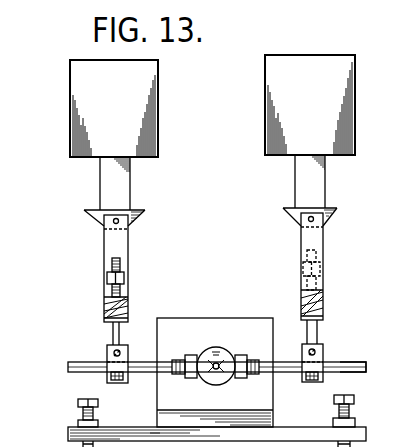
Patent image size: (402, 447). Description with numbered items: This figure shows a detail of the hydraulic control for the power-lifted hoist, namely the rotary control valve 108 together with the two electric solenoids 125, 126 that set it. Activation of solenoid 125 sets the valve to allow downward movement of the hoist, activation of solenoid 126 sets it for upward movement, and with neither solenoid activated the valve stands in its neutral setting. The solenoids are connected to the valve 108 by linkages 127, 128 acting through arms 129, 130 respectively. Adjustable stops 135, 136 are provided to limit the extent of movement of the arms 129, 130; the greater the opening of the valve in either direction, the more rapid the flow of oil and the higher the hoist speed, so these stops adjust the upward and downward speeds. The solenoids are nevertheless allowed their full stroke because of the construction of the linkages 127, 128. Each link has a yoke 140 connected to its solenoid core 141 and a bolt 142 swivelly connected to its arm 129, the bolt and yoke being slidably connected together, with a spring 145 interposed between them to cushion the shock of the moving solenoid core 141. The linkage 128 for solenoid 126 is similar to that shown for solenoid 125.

The rotary control valve 108 is at (207, 323).
The electric solenoid 125 is at (120, 121).
The electric solenoid 126 is at (316, 124).
The linkage 127 is at (134, 355).
The linkage 128 is at (288, 351).
The arm 129 is at (78, 362).
The arm 130 is at (340, 360).
The adjustable stop 135 is at (80, 412).
The adjustable stop 136 is at (349, 412).
The yoke 140 is at (104, 251).
The solenoid core 141 is at (100, 190).
The bolt 142 is at (124, 278).
The spring 145 is at (104, 306).